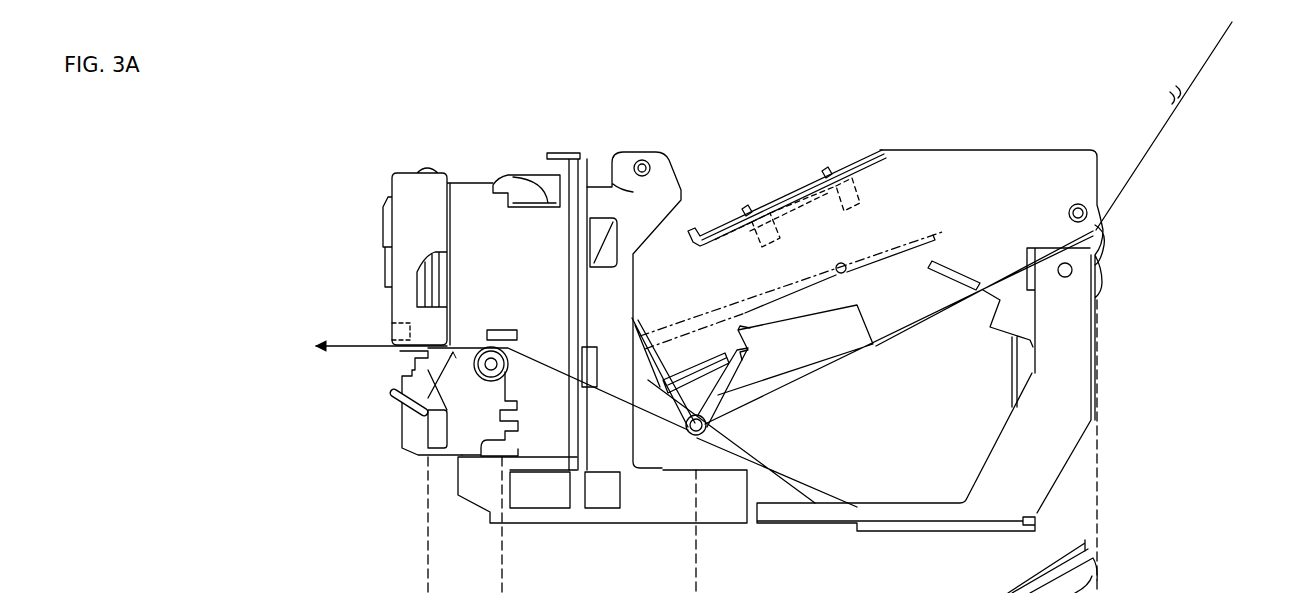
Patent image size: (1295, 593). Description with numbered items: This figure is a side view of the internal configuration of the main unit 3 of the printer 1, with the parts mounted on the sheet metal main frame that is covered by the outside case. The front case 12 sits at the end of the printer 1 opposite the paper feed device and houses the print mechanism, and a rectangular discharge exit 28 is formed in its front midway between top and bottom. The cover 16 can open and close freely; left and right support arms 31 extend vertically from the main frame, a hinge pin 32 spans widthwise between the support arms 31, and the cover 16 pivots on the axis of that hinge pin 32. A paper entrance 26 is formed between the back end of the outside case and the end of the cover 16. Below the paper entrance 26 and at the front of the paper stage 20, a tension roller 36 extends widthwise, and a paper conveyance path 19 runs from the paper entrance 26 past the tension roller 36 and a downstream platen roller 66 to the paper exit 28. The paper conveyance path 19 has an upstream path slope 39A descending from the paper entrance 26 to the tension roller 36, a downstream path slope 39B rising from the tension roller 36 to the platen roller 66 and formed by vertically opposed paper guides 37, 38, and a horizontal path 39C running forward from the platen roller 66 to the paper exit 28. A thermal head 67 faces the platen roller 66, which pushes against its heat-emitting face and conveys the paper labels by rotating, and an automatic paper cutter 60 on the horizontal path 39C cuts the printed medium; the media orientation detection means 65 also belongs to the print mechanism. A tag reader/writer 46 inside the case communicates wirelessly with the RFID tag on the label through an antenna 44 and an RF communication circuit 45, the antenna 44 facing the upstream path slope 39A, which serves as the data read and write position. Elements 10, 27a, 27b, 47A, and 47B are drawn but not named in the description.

The printer 1 is at (673, 74).
The main unit 3 is at (891, 94).
The sheet 10 is at (1202, 82).
The front case 12 is at (541, 147).
The cover 16 is at (941, 146).
The paper conveyance path 19 is at (880, 405).
The paper stage 20 is at (788, 437).
The paper entrance 26 is at (1114, 242).
The hole 27a is at (1074, 270).
The hole 27b is at (1077, 203).
The discharge exit 28 is at (374, 347).
The support arms 31 is at (678, 152).
The hinge pin 32 is at (640, 158).
The tension roller 36 is at (697, 528).
The paper guide 37 is at (645, 398).
The paper guide 38 is at (688, 440).
The upstream path slope 39A is at (960, 310).
The downstream path slope 39B is at (620, 410).
The horizontal path 39C is at (426, 400).
The antenna 44 is at (869, 240).
The RF communication circuit 45 is at (795, 180).
The tag reader/writer 46 is at (768, 196).
The box unit 47A is at (417, 165).
The bracket 47B is at (398, 430).
The automatic paper cutter 60 is at (382, 283).
The media orientation detection means 65 is at (396, 324).
The platen roller 66 is at (475, 378).
The thermal head 67 is at (490, 328).